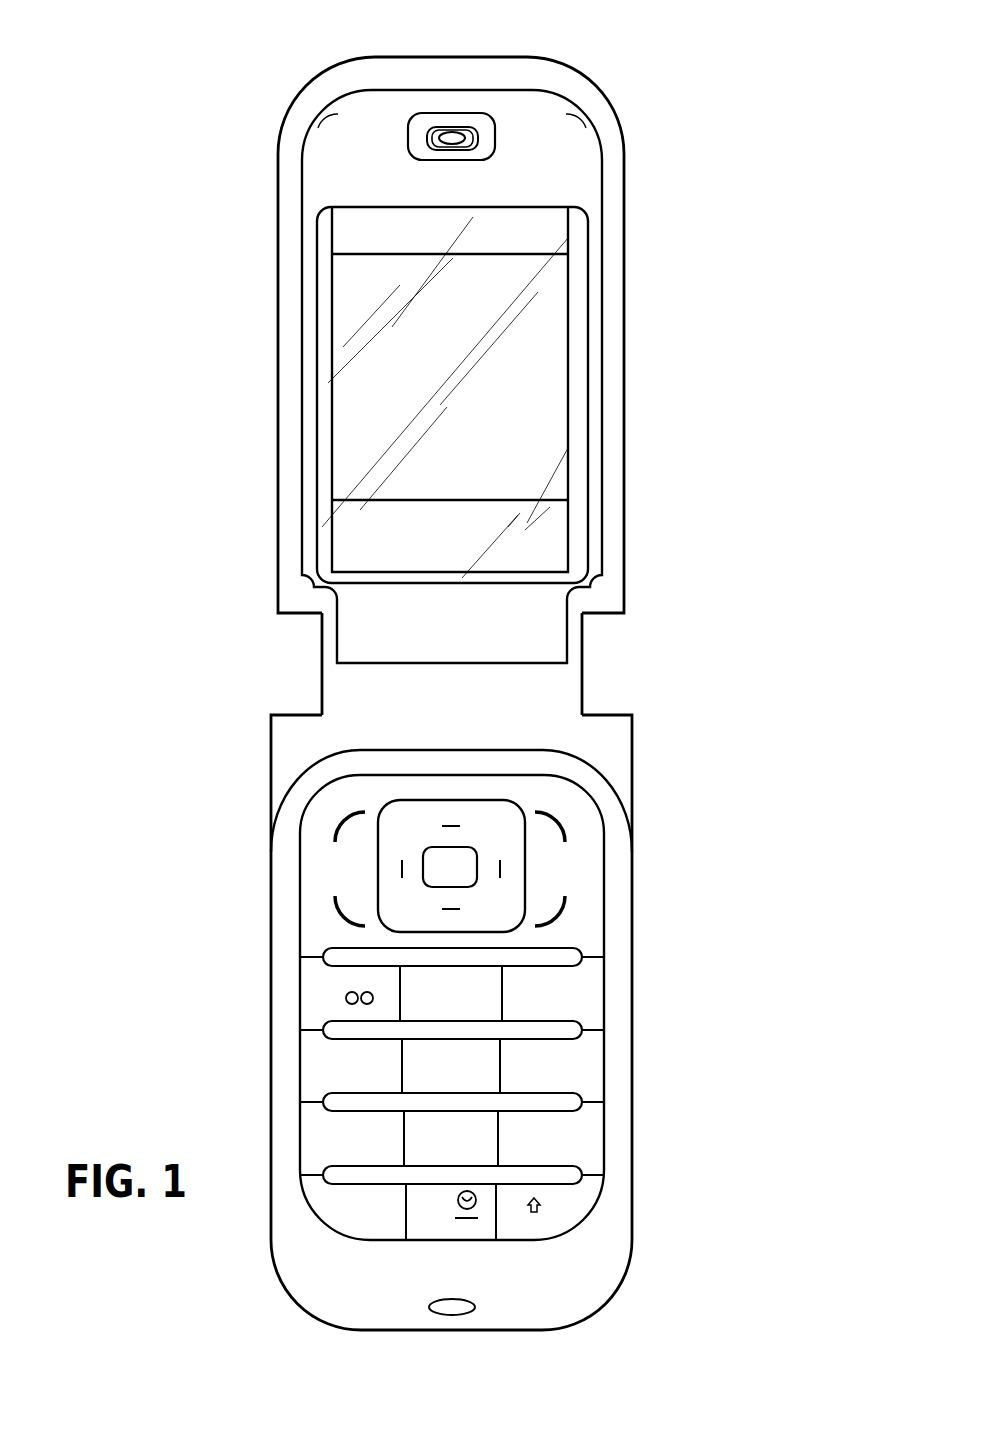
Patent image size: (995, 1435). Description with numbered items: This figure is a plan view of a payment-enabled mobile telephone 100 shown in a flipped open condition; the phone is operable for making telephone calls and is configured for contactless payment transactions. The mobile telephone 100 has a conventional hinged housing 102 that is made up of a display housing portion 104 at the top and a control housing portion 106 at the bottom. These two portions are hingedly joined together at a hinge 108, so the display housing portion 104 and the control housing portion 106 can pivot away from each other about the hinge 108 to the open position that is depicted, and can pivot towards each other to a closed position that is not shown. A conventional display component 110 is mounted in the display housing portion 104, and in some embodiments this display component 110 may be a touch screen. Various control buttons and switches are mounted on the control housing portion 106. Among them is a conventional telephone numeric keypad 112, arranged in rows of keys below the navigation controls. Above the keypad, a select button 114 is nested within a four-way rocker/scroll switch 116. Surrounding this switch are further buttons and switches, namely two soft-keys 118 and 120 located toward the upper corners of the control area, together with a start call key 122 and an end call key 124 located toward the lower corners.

The mobile telephone 100 is at (743, 80).
The hinged housing 102 is at (242, 225).
The display housing portion 104 is at (625, 225).
The control housing portion 106 is at (633, 898).
The hinge 108 is at (583, 677).
The display component 110 is at (552, 377).
The telephone numeric keypad 112 is at (292, 1068).
The select button 114 is at (477, 857).
The four-way rocker/scroll switch 116 is at (388, 860).
The soft-key 118 is at (334, 831).
The soft-key 120 is at (567, 821).
The start call key 122 is at (335, 910).
The end call key 124 is at (566, 913).